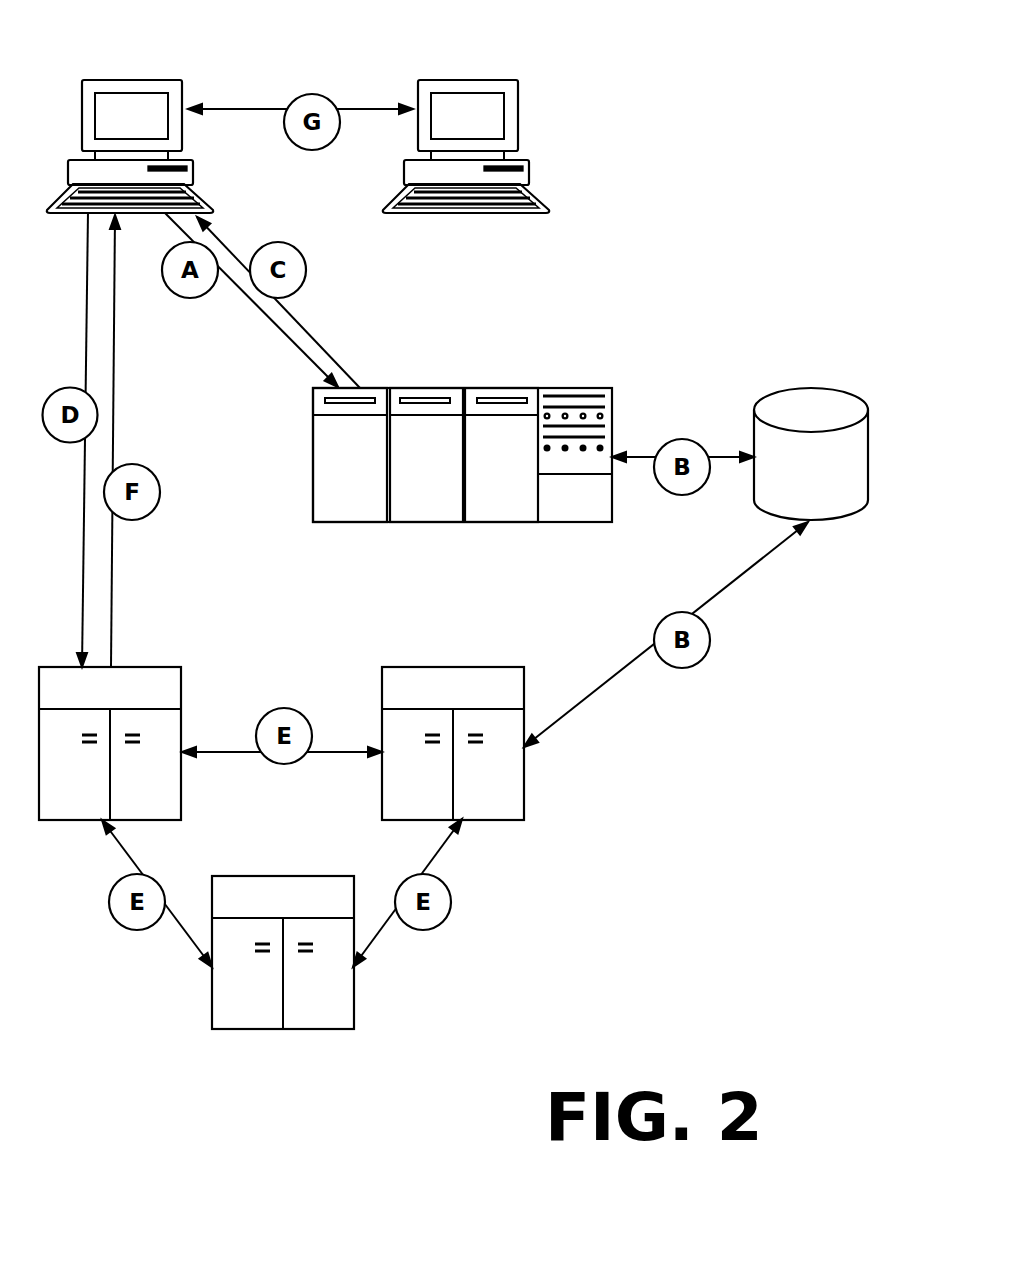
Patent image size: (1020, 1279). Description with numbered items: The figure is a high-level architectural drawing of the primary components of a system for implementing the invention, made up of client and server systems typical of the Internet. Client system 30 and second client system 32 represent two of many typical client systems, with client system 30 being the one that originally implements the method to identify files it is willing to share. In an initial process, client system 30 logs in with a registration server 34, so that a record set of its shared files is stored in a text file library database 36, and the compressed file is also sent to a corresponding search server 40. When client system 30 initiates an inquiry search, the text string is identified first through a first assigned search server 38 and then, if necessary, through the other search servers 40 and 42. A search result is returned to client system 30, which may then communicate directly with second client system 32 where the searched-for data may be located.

The client system 30 is at (169, 114).
The second client system 32 is at (507, 114).
The registration server 34 is at (486, 424).
The text file library database 36 is at (784, 385).
The first assigned search server 38 is at (161, 713).
The search server 40 is at (450, 706).
The search server 42 is at (375, 952).